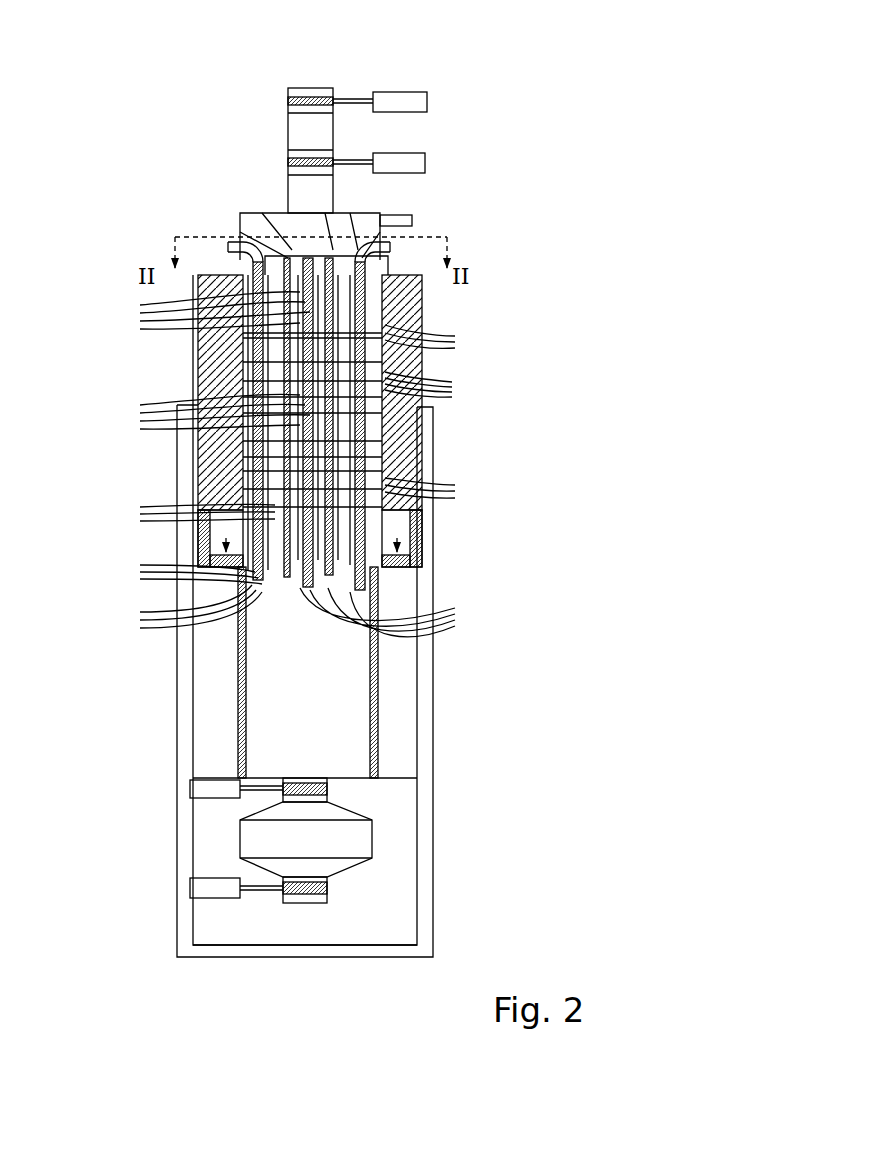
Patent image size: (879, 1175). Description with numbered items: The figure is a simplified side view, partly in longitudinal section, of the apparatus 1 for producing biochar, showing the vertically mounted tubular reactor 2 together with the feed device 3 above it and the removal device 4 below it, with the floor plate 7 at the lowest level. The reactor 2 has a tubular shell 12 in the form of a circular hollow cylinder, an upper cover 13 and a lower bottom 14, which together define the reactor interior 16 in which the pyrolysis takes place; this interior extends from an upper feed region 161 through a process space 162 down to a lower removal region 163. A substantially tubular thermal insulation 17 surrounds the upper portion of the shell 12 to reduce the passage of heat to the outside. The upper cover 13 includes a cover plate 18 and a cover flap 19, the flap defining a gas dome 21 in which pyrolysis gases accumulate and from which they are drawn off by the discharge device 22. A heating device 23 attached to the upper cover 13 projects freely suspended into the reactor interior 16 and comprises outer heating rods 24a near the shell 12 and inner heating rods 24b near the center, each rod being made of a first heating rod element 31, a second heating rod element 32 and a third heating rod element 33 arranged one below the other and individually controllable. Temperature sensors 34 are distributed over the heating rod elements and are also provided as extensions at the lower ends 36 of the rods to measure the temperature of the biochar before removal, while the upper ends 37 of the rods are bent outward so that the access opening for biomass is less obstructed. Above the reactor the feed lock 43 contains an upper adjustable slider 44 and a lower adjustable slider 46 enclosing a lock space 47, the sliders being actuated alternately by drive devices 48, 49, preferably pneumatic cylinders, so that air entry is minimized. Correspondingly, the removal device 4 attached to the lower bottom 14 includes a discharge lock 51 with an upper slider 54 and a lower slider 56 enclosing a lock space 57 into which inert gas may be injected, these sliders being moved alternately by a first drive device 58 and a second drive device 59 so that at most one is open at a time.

The apparatus 1 is at (128, 108).
The reactor 2 is at (108, 228).
The feed device 3 is at (262, 92).
The removal device 4 is at (285, 913).
The floor plate 7 is at (353, 958).
The tubular shell 12 is at (165, 945).
The upper cover 13 is at (258, 160).
The lower bottom 14 is at (327, 783).
The reactor interior 16 is at (273, 380).
The thermal insulation 17 is at (215, 470).
The cover plate 18 is at (240, 260).
The cover flap 19 is at (278, 213).
The gas dome 21 is at (368, 222).
The discharge device 22 is at (410, 218).
The heating device 23 is at (240, 352).
The outer heating rods 24a is at (180, 443).
The inner heating rods 24b is at (420, 468).
The first heating rod element 31 is at (434, 340).
The second heating rod element 32 is at (431, 386).
The third heating rod element 33 is at (434, 491).
The temperature sensors 34 is at (293, 464).
The lower ends of the heating rods 36 is at (182, 571).
The upper ends of the heating rods 37 is at (258, 262).
The feed lock 43 is at (466, 78).
The upper adjustable slider 44 is at (307, 102).
The lower adjustable slider 46 is at (328, 148).
The lock space 47 is at (313, 130).
The drive device 48 is at (427, 101).
The drive device 49 is at (425, 163).
The discharge lock 51 is at (220, 843).
The upper slider 54 is at (330, 788).
The lower slider 56 is at (328, 886).
The lock space 57 is at (352, 843).
The first drive device 58 is at (237, 802).
The second drive device 59 is at (198, 888).
The upper feed region 161 is at (370, 278).
The process space 162 is at (267, 478).
The lower removal region 163 is at (272, 712).